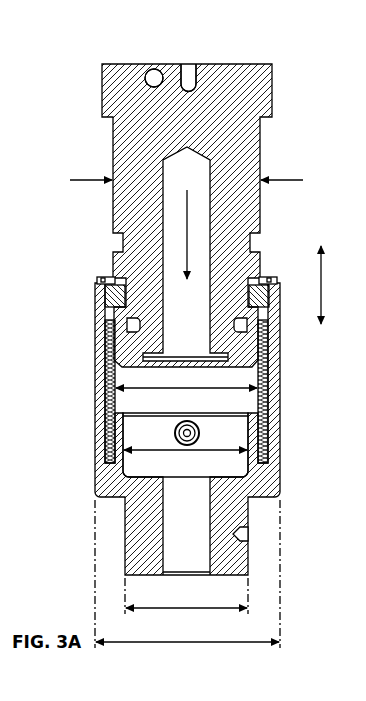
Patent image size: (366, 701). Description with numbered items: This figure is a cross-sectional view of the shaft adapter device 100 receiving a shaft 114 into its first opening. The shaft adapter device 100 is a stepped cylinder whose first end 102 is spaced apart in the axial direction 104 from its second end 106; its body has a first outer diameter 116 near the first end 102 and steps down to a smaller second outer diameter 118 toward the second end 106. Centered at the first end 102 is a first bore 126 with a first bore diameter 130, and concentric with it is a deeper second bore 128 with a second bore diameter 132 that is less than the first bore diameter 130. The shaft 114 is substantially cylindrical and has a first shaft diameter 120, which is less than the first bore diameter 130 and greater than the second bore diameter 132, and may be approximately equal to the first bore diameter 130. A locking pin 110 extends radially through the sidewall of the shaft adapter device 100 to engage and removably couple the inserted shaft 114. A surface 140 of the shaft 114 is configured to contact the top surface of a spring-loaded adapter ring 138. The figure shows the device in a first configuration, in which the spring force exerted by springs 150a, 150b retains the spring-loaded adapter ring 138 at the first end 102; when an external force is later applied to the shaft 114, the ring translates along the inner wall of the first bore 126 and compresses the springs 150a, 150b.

The shaft adapter device 100 is at (106, 60).
The first end 102 is at (270, 265).
The axial direction 104 is at (323, 278).
The second end 106 is at (139, 570).
The locking pin 110 is at (174, 433).
The shaft 114 is at (280, 124).
The first outer diameter 116 is at (212, 641).
The second outer diameter 118 is at (212, 607).
The first shaft diameter 120 is at (286, 178).
The first bore 126 is at (200, 386).
The second bore 128 is at (238, 436).
The first bore diameter 130 is at (226, 389).
The second bore diameter 132 is at (226, 451).
The spring-loaded adapter ring 138 is at (112, 299).
The surface 140 is at (121, 287).
The spring 150a is at (277, 360).
The spring 150b is at (106, 366).